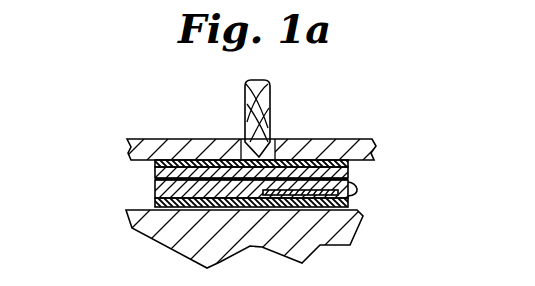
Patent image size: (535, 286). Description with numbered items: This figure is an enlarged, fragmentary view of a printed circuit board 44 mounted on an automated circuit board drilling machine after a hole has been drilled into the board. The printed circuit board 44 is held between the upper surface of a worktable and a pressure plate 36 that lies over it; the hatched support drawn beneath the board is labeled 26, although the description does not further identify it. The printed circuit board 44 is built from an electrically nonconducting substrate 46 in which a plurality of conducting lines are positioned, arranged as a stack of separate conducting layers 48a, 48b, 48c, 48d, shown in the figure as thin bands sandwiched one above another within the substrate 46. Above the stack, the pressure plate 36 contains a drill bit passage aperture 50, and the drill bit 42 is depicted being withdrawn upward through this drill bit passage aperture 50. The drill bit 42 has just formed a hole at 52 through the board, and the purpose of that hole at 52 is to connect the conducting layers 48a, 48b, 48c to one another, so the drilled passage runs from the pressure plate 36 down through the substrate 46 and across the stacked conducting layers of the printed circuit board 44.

The base support plate 26 is at (345, 230).
The pressure plate 36 is at (337, 153).
The drill bit 42 is at (270, 112).
The printed circuit board 44 is at (358, 189).
The electrically nonconducting substrate 46 is at (350, 188).
The conducting layer 48a is at (163, 167).
The conducting layer 48b is at (160, 182).
The conducting layer 48c is at (158, 195).
The conducting layer 48d is at (130, 207).
The drill bit passage aperture 50 is at (278, 136).
The hole 52 is at (244, 140).